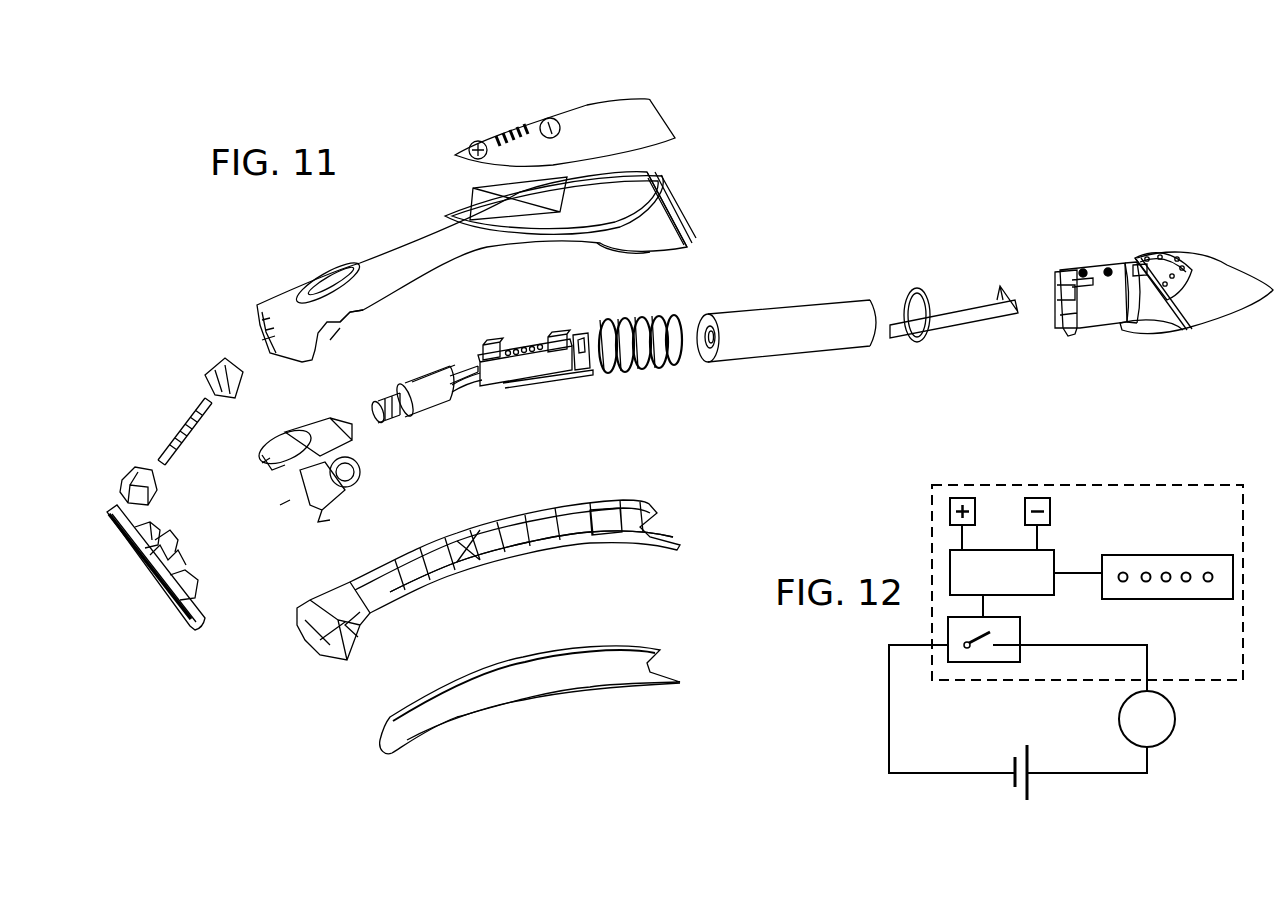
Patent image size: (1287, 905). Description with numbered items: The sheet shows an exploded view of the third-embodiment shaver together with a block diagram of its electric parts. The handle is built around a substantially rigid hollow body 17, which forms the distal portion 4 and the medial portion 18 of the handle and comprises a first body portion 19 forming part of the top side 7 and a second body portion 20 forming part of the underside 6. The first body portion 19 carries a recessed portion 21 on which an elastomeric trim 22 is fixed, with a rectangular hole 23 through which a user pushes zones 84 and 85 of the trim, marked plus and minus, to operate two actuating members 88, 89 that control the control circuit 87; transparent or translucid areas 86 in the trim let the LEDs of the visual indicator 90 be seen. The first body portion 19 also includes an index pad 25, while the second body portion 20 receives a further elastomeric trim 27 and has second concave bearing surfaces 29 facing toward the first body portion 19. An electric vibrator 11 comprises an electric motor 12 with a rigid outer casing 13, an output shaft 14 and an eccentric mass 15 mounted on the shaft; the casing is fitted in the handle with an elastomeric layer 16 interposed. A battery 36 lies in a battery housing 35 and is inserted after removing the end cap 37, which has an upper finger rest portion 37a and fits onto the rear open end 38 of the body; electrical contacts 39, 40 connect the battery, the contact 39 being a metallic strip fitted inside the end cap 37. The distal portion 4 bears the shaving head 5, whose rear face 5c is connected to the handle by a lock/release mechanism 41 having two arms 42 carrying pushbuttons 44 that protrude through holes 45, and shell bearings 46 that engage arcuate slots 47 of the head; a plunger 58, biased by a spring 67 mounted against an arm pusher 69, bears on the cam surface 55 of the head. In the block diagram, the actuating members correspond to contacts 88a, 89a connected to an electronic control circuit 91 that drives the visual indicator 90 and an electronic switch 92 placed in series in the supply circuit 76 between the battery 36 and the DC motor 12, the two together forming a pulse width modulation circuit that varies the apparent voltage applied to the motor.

In FIG. 11, the distal portion 4 is at (257, 307).
In FIG. 11, the shaving head 5 is at (190, 632).
In FIG. 11, the rear face 5c is at (184, 561).
In FIG. 11, the underside 6 is at (547, 555).
In FIG. 11, the top side 7 is at (407, 242).
In FIG. 11, the electric vibrator 11 is at (387, 450).
In FIG. 11, the electric motor 12 is at (412, 380).
In FIG. 12, the electric motor 12 is at (1168, 739).
In FIG. 11, the rigid outer casing 13 is at (437, 378).
In FIG. 11, the output shaft 14 is at (390, 398).
In FIG. 11, the eccentric mass 15 is at (378, 408).
In FIG. 11, the elastomeric layer 16 is at (443, 405).
In FIG. 11, the hollow body 17 is at (687, 223).
In FIG. 11, the medial portion 18 is at (452, 207).
In FIG. 11, the first body portion 19 is at (273, 305).
In FIG. 11, the second body portion 20 is at (482, 562).
In FIG. 11, the recessed portion 21 is at (637, 190).
In FIG. 11, the elastomeric trim 22 is at (620, 113).
In FIG. 11, the hole 23 is at (523, 200).
In FIG. 11, the index pad 25 is at (325, 280).
In FIG. 11, the further elastomeric trim 27 is at (530, 695).
In FIG. 11, the second concave bearing surfaces 29 is at (450, 538).
In FIG. 11, the battery housing 35 is at (1055, 282).
In FIG. 11, the battery 36 is at (783, 318).
In FIG. 12, the battery 36 is at (1037, 784).
In FIG. 11, the end cap 37 is at (1227, 273).
In FIG. 11, the upper finger rest portion 37a is at (1155, 255).
In FIG. 11, the rear open end 38 is at (690, 247).
In FIG. 11, the electrical contact 39 is at (973, 318).
In FIG. 11, the electrical contact 40 is at (582, 333).
In FIG. 11, the lock/release mechanism 41 is at (262, 527).
In FIG. 11, the arms 42 is at (328, 425).
In FIG. 11, the pushbuttons 44 is at (302, 423).
In FIG. 11, the holes 45 is at (350, 310).
In FIG. 11, the shell bearings 46 is at (285, 508).
In FIG. 11, the arcuate slots 47 is at (157, 542).
In FIG. 11, the cam surface 55 is at (140, 572).
In FIG. 11, the plunger 58 is at (123, 467).
In FIG. 11, the spring 67 is at (178, 430).
In FIG. 11, the arm pusher 69 is at (223, 357).
In FIG. 12, the supply circuit 76 is at (1155, 782).
In FIG. 11, the zone 84 is at (475, 147).
In FIG. 11, the zone 85 is at (548, 122).
In FIG. 11, the transparent or translucid areas 86 is at (525, 128).
In FIG. 11, the control circuit 87 is at (540, 370).
In FIG. 12, the control circuit 87 is at (1193, 485).
In FIG. 11, the actuating member 88 is at (492, 345).
In FIG. 12, the contact 88a is at (963, 497).
In FIG. 11, the actuating member 89 is at (558, 340).
In FIG. 12, the contact 89a is at (1038, 497).
In FIG. 11, the visual indicator 90 is at (547, 332).
In FIG. 12, the visual indicator 90 is at (1162, 555).
In FIG. 12, the electronic control circuit 91 is at (1054, 551).
In FIG. 12, the electronic switch 92 is at (1020, 628).